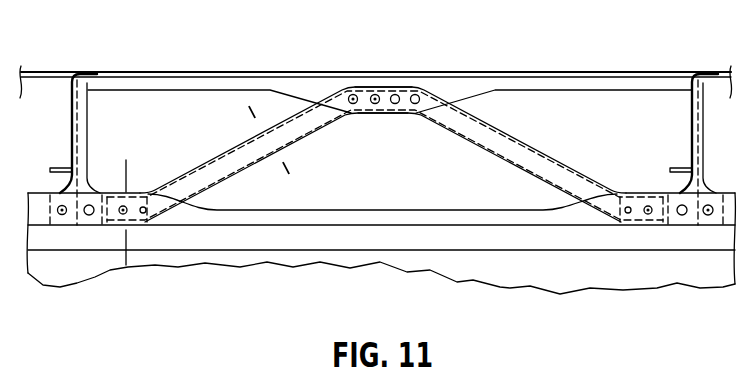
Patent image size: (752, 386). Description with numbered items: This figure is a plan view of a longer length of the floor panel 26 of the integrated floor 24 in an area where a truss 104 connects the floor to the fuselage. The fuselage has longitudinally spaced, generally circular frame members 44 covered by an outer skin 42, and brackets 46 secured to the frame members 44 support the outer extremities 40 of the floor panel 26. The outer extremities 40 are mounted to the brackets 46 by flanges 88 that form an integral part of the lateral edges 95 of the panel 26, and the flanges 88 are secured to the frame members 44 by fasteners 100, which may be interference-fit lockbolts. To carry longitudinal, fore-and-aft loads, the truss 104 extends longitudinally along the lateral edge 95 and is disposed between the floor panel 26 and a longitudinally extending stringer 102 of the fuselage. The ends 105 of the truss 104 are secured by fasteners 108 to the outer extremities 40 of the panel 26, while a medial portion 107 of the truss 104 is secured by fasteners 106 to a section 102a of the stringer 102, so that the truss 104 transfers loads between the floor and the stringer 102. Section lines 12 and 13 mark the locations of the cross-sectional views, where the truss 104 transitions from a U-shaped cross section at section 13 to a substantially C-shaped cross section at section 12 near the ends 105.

The section line 12- 12 is at (127, 250).
The section line 13- 13 is at (267, 178).
The integrated floor 24 is at (678, 296).
The floor panel 26 is at (530, 266).
The outer extremities of the floor panel 40 is at (128, 268).
The outer skin 42 is at (172, 73).
The frame members 44 is at (60, 167).
The brackets 46 is at (82, 142).
The flanges 88 is at (204, 214).
The lateral edges of the floor panel 95 is at (283, 212).
The fasteners 100 is at (62, 215).
The stringers 102 is at (565, 86).
The section of the stringers 102a is at (381, 119).
The trusses 104 is at (522, 160).
The ends of the trusses 105 is at (637, 196).
The fasteners 106 is at (372, 94).
The medial portion of the trusses 107 is at (397, 94).
The fasteners 108 is at (127, 212).